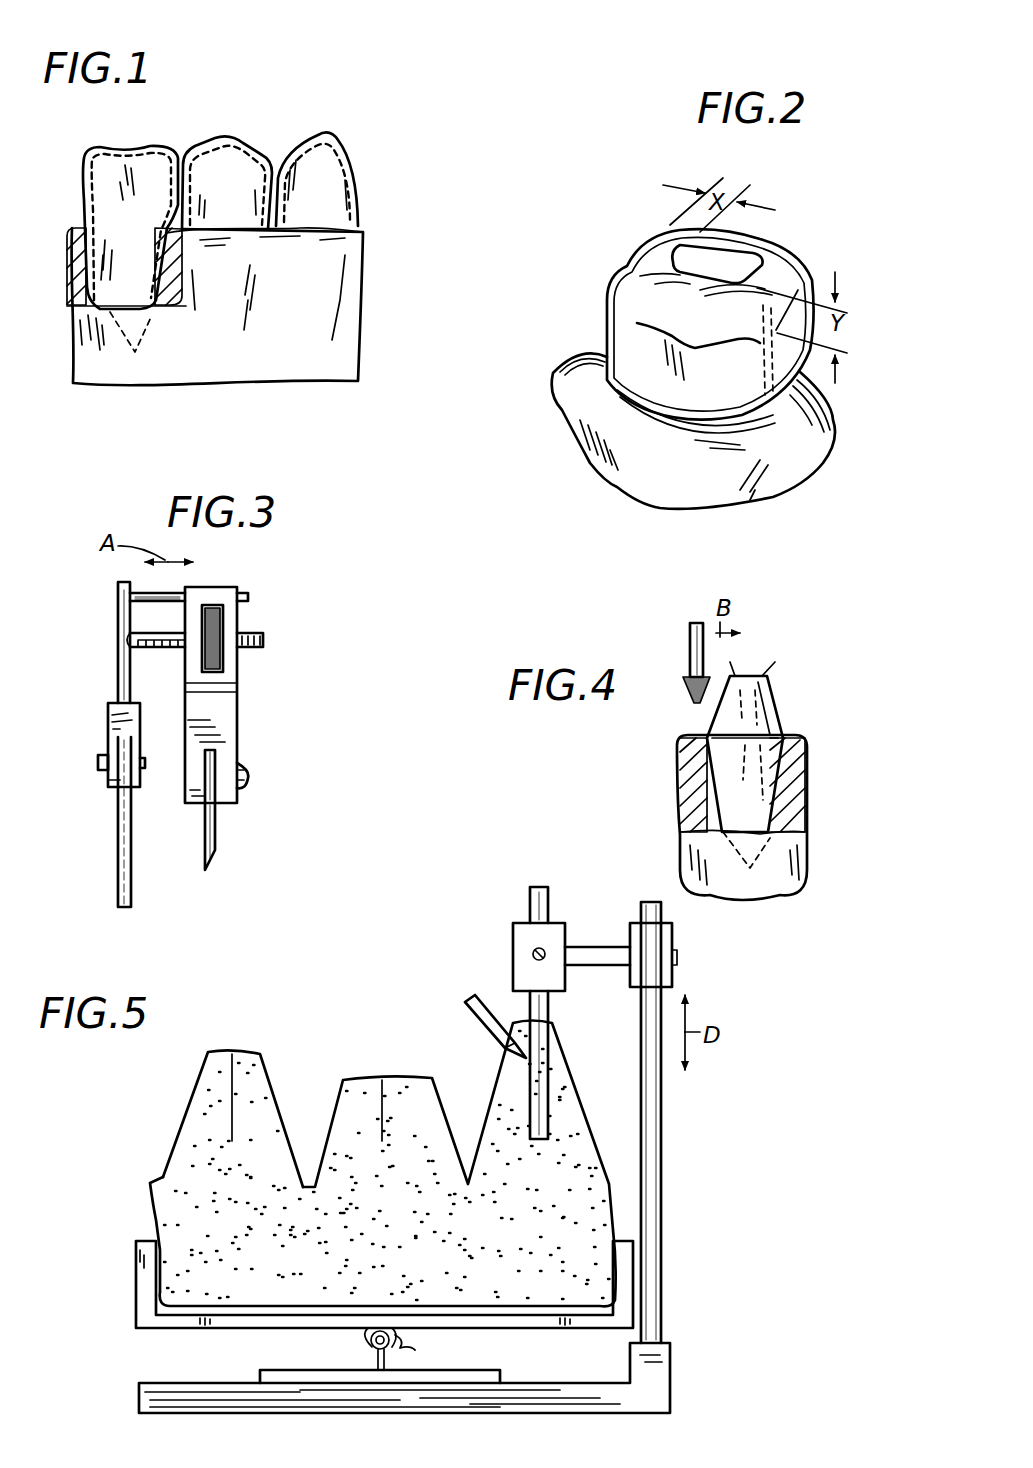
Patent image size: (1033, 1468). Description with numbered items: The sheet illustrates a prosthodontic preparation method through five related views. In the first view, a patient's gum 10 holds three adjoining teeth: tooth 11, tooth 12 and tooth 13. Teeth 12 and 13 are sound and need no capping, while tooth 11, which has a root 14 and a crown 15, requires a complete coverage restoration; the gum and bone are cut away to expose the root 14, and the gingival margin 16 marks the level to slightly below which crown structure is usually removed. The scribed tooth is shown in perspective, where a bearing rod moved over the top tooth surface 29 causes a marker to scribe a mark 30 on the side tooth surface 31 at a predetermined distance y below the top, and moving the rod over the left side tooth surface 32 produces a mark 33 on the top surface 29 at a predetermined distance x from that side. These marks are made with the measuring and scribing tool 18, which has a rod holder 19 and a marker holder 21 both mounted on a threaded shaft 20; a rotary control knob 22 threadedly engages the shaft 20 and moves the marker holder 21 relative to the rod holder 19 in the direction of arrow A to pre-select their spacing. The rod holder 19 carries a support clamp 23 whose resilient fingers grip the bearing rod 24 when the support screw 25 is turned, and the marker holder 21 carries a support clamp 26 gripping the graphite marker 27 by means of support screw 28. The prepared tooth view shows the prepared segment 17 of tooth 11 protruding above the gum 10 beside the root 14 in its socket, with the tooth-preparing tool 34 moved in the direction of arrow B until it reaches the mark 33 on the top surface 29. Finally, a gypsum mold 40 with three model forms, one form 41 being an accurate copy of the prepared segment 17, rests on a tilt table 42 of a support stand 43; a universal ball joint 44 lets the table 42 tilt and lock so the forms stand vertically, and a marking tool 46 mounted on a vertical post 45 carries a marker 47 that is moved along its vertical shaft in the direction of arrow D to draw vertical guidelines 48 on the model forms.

In FIG. 1, the gum 10 is at (82, 340).
In FIG. 2, the gum 10 is at (577, 417).
In FIG. 4, the gum 10 is at (793, 860).
In FIG. 1, the tooth 11 is at (96, 210).
In FIG. 2, the tooth 11 is at (700, 305).
In FIG. 1, the tooth 12 is at (222, 142).
In FIG. 1, the tooth 13 is at (353, 145).
In FIG. 1, the root 14 is at (103, 247).
In FIG. 4, the root 14 is at (730, 797).
In FIG. 1, the crown 15 is at (90, 176).
In FIG. 1, the gingival margin 16 is at (82, 228).
In FIG. 4, the prepared segment 17 is at (775, 724).
In FIG. 3, the measuring and scribing tool 18 is at (181, 734).
In FIG. 3, the rod holder 19 is at (118, 682).
In FIG. 3, the threaded shaft 20 is at (257, 634).
In FIG. 3, the marker holder 21 is at (193, 607).
In FIG. 3, the rotary control knob 22 is at (212, 607).
In FIG. 3, the support clamp 23 is at (112, 782).
In FIG. 3, the bearing rod 24 is at (120, 865).
In FIG. 3, the support screw 25 is at (100, 765).
In FIG. 3, the support clamp 26 is at (225, 702).
In FIG. 3, the marker 27 is at (213, 845).
In FIG. 3, the support screw 28 is at (247, 768).
In FIG. 2, the top tooth surface 29 is at (750, 267).
In FIG. 4, the top tooth surface 29 is at (753, 678).
In FIG. 2, the mark 30 is at (647, 327).
In FIG. 2, the side tooth surface 31 is at (745, 390).
In FIG. 2, the left side tooth surface 32 is at (647, 255).
In FIG. 2, the mark 33 is at (627, 273).
In FIG. 4, the mark 33 is at (730, 672).
In FIG. 4, the tooth-preparing tool 34 is at (683, 668).
In FIG. 5, the gypsum mold 40 is at (355, 1164).
In FIG. 5, the model form 41 is at (193, 1113).
In FIG. 5, the tilt table 42 is at (360, 1307).
In FIG. 5, the support stand 43 is at (439, 1157).
In FIG. 5, the universal ball joint 44 is at (360, 1345).
In FIG. 5, the vertical post 45 is at (653, 1160).
In FIG. 5, the marking tool 46 is at (493, 945).
In FIG. 5, the marker 47 is at (465, 1013).
In FIG. 5, the lines 48 is at (232, 1089).